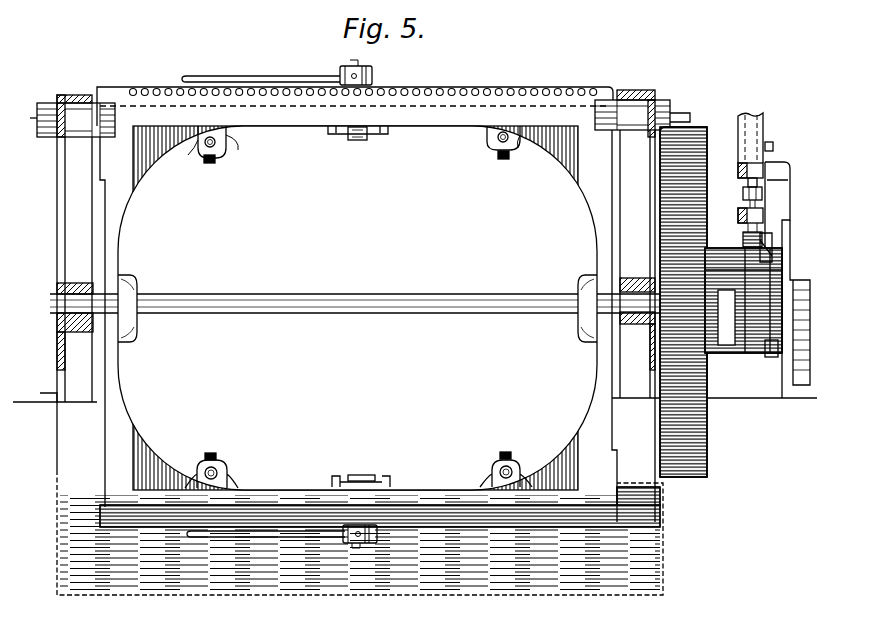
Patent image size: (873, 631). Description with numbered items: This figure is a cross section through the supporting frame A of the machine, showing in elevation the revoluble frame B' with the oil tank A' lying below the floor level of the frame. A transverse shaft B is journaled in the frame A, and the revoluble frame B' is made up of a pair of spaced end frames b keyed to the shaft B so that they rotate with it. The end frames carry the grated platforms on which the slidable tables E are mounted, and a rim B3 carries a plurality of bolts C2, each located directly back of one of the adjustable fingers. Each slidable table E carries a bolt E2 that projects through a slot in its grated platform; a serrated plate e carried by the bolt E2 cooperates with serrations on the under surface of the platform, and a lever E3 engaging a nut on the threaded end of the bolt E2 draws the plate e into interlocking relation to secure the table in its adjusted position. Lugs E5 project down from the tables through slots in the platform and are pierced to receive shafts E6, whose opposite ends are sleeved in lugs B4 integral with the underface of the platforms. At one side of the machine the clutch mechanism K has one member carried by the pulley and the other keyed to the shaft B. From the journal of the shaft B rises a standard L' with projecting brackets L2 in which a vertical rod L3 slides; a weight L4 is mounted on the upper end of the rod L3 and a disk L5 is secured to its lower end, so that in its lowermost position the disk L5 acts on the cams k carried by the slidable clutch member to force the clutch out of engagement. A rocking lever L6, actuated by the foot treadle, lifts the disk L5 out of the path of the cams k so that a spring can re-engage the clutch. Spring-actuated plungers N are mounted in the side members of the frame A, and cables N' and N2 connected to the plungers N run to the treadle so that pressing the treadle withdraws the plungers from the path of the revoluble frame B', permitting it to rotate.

The frame of the machine A is at (415, 312).
The oil tank A' is at (376, 532).
The transverse shaft B is at (355, 314).
The revoluble frame B' is at (357, 308).
The rim B3 is at (598, 80).
The lugs B4 is at (522, 152).
The end frames b is at (118, 250).
The bolts C2 is at (558, 95).
The slidable tables E is at (452, 522).
The bolt E2 is at (358, 556).
The lever E3 is at (270, 553).
The lugs E5 is at (499, 465).
The shafts E6 is at (220, 143).
The serrated plate e is at (368, 134).
The clutch mechanism K is at (735, 353).
The cams k is at (768, 368).
The standard L' is at (789, 280).
The brackets L2 is at (738, 214).
The vertical rod L3 is at (748, 183).
The weight L4 is at (764, 128).
The disk L5 is at (743, 236).
The rocking lever L6 is at (760, 199).
The spring actuated plungers N is at (353, 98).
The cable N' is at (26, 142).
The cable N2 is at (668, 118).